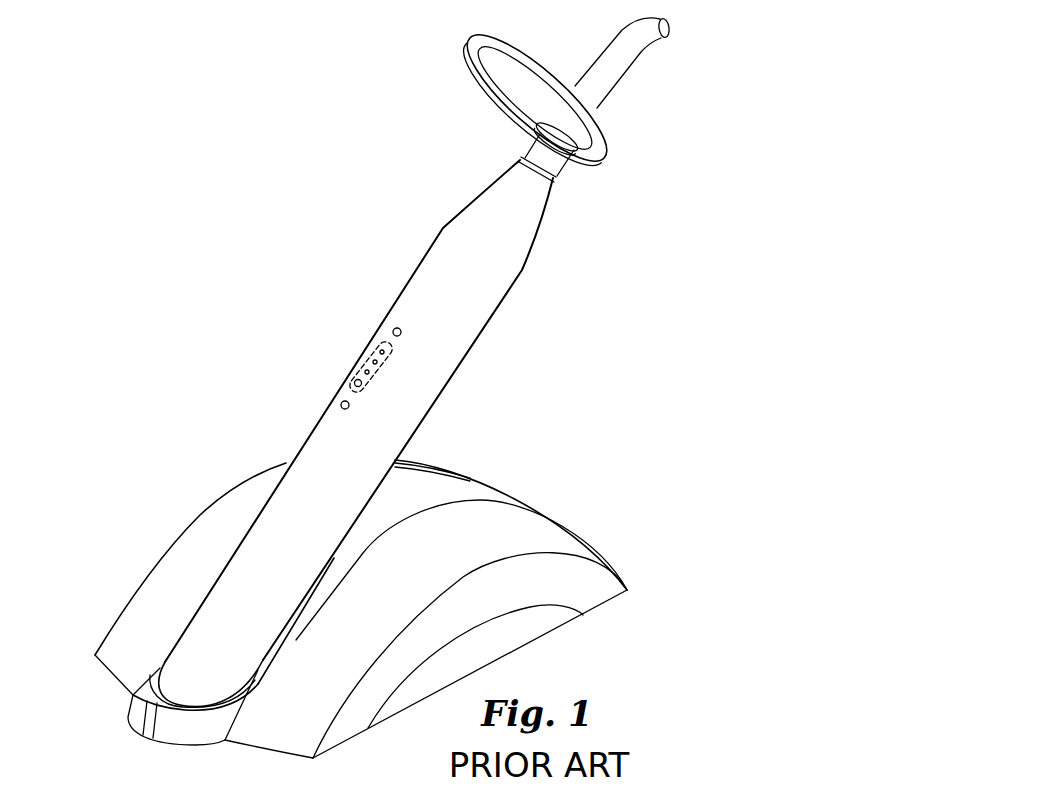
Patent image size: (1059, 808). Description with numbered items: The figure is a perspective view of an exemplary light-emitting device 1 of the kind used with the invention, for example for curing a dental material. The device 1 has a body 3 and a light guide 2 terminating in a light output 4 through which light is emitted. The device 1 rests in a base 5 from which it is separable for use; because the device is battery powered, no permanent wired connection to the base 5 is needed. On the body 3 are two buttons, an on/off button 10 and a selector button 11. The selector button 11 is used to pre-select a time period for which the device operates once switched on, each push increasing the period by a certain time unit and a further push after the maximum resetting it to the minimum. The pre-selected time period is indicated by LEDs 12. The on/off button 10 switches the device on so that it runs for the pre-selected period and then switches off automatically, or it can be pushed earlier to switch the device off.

The light-emitting device 1 is at (428, 362).
The light guide 2 is at (603, 58).
The body 3 is at (310, 468).
The light output 4 is at (662, 32).
The base 5 is at (350, 723).
The on/off button 10 is at (395, 329).
The selector button 11 is at (343, 402).
The LEDs 12 is at (368, 370).